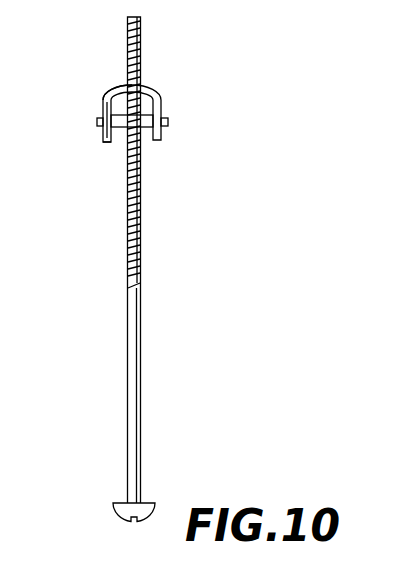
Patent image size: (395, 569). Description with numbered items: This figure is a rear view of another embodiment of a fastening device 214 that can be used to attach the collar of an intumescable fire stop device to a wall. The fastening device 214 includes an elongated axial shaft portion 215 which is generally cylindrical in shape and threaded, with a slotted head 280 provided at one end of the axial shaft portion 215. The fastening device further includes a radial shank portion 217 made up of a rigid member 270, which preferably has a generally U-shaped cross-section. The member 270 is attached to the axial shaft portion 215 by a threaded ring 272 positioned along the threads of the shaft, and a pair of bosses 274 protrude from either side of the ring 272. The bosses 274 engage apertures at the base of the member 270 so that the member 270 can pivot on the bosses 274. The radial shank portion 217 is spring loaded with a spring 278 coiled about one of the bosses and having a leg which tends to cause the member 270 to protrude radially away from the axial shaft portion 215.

The fastening device 214 is at (163, 185).
The axial shaft portion 215 is at (143, 270).
The radial shank portion 217 is at (158, 93).
The rigid member 270 is at (105, 100).
The threaded ring 272 is at (153, 140).
The bosses 274 is at (102, 122).
The spring 278 is at (112, 148).
The slotted head 280 is at (115, 507).